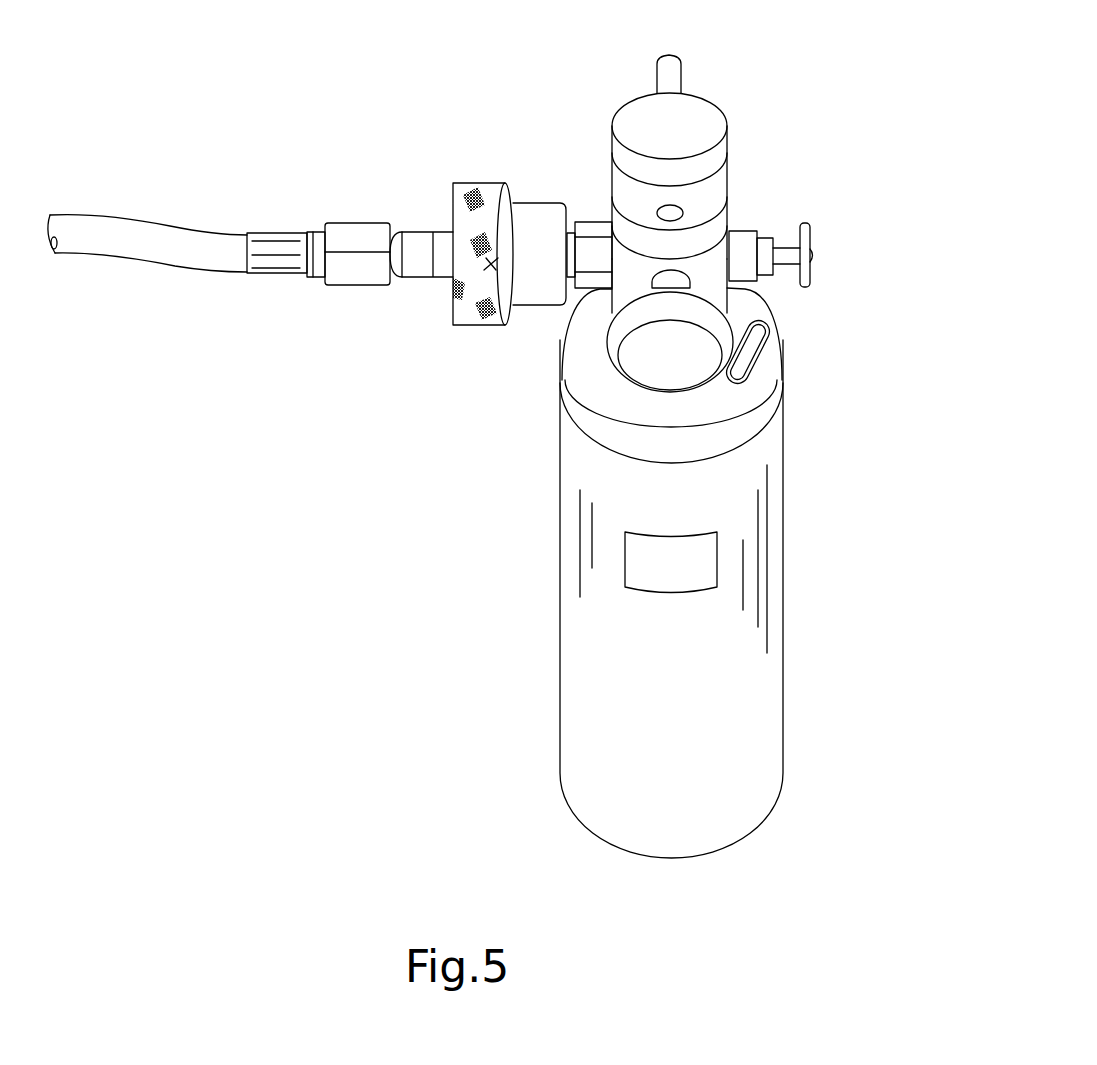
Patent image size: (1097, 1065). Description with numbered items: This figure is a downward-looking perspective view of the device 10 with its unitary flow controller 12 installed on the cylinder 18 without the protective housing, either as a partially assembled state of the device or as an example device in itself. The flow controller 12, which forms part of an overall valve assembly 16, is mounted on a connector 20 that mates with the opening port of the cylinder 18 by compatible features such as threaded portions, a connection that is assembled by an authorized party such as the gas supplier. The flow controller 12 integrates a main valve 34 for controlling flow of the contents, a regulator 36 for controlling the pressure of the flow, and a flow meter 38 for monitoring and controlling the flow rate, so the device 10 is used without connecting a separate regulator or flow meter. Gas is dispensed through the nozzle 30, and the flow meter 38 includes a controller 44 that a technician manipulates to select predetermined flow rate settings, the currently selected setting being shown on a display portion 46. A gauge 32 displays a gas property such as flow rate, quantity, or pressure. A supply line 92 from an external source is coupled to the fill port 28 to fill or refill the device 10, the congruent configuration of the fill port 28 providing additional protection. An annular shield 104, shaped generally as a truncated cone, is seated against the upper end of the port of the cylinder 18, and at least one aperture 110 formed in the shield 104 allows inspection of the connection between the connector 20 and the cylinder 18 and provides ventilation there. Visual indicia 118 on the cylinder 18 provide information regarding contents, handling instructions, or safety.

The device 10 is at (776, 45).
The unitary flow controller 12 is at (730, 177).
The valve assembly 16 is at (538, 104).
The cylinder 18 is at (578, 640).
The connector 20 is at (705, 278).
The fill port 28 is at (529, 319).
The nozzle 30 is at (672, 77).
The gauge 32 is at (673, 365).
The main valve 34 is at (811, 231).
The regulator 36 is at (727, 226).
The flow meter 38 is at (614, 190).
The controller 44 is at (703, 115).
The display portion 46 is at (669, 208).
The supply line 92 is at (434, 294).
The shield 104 is at (586, 383).
The aperture 110 is at (759, 340).
The visual indicia 118 is at (703, 557).